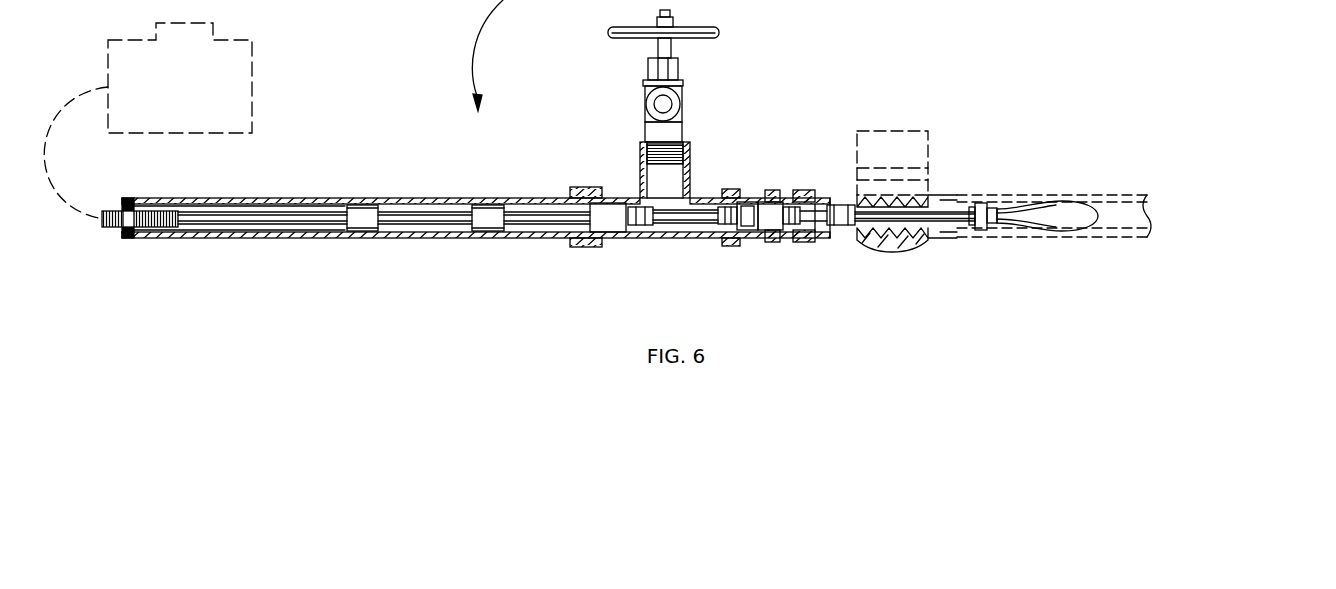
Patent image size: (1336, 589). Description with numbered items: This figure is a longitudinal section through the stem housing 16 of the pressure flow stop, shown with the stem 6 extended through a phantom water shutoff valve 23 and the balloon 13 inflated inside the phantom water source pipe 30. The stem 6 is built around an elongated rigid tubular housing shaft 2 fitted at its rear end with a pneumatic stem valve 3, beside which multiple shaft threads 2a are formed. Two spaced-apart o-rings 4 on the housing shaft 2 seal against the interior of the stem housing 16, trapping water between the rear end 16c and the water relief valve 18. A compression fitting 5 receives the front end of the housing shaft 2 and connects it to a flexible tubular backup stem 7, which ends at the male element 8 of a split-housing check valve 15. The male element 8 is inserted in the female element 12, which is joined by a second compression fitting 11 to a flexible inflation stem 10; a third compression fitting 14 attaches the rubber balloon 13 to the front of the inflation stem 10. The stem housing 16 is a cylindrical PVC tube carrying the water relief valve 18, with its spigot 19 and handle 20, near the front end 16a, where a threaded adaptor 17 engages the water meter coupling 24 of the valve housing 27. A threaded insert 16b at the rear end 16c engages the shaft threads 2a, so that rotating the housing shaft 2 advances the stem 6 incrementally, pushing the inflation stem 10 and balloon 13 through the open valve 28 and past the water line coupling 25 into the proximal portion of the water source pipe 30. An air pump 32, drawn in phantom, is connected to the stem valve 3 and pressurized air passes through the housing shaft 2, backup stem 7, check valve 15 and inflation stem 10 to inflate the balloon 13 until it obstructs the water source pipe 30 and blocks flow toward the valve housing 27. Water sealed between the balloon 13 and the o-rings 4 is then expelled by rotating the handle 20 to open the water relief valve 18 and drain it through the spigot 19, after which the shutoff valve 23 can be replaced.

The housing shaft 2 is at (313, 216).
The shaft threads 2a is at (173, 215).
The pneumatic stem valve 3 is at (103, 210).
The o-rings 4 is at (362, 213).
The compression fitting 5 is at (637, 223).
The stem 6 is at (180, 248).
The backup stem 7 is at (688, 223).
The male element 8 is at (750, 216).
The inflation stem 10 is at (932, 214).
The second compression fitting 11 is at (832, 224).
The female element 12 is at (777, 216).
The balloon 13 is at (1066, 219).
The third compression fitting 14 is at (984, 207).
The split-housing check valve 15 is at (757, 186).
The stem housing 16 is at (393, 182).
The front end 16a is at (790, 242).
The threaded insert 16b is at (125, 200).
The rear end 16c is at (126, 237).
The threaded adaptor 17 is at (792, 193).
The water relief valve 18 is at (697, 185).
The spigot 19 is at (672, 103).
The handle 20 is at (606, 34).
The water shutoff valve 23 is at (904, 118).
The water meter coupling 24 is at (832, 195).
The water line coupling 25 is at (967, 193).
The valve housing 27 is at (904, 268).
The valve 28 is at (873, 147).
The water source pipe 30 is at (1125, 193).
The air pump 32 is at (252, 77).